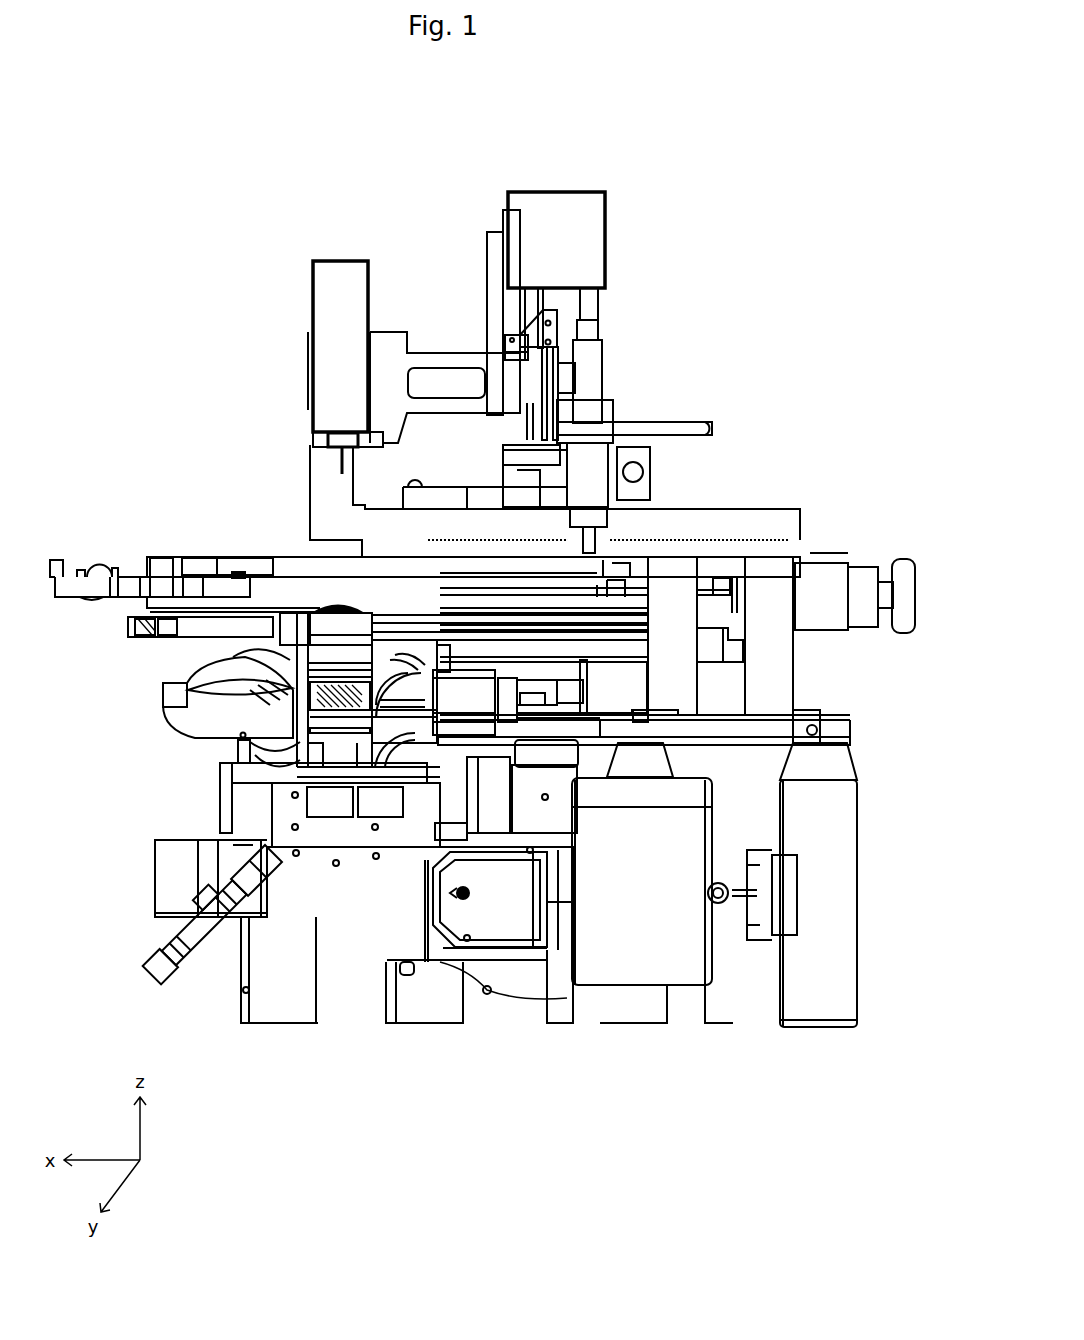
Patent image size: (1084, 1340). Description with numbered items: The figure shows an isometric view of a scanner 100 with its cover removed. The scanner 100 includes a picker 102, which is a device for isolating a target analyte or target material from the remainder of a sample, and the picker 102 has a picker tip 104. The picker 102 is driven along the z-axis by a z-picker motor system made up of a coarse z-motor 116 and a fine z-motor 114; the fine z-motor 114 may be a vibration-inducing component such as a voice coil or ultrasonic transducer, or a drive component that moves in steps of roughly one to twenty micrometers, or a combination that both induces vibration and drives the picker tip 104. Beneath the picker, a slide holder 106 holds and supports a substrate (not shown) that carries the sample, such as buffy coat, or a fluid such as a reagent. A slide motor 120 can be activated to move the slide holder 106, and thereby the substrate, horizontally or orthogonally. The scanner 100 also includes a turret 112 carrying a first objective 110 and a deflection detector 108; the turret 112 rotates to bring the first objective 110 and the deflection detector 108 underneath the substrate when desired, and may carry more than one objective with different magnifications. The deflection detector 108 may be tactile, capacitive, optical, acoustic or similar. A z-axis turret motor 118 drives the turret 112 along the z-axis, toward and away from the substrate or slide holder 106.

The scanner 100 is at (263, 218).
The picker 102 is at (311, 375).
The picker tip 104 is at (334, 463).
The slide holder 106 is at (95, 556).
The deflection detector 108 is at (245, 640).
The first objective 110 is at (385, 675).
The turret 112 is at (290, 738).
The fine z-motor 114 is at (445, 340).
The coarse z-motor 116 is at (608, 237).
The z-axis turret motor 118 is at (231, 836).
The slide motor 120 is at (597, 590).